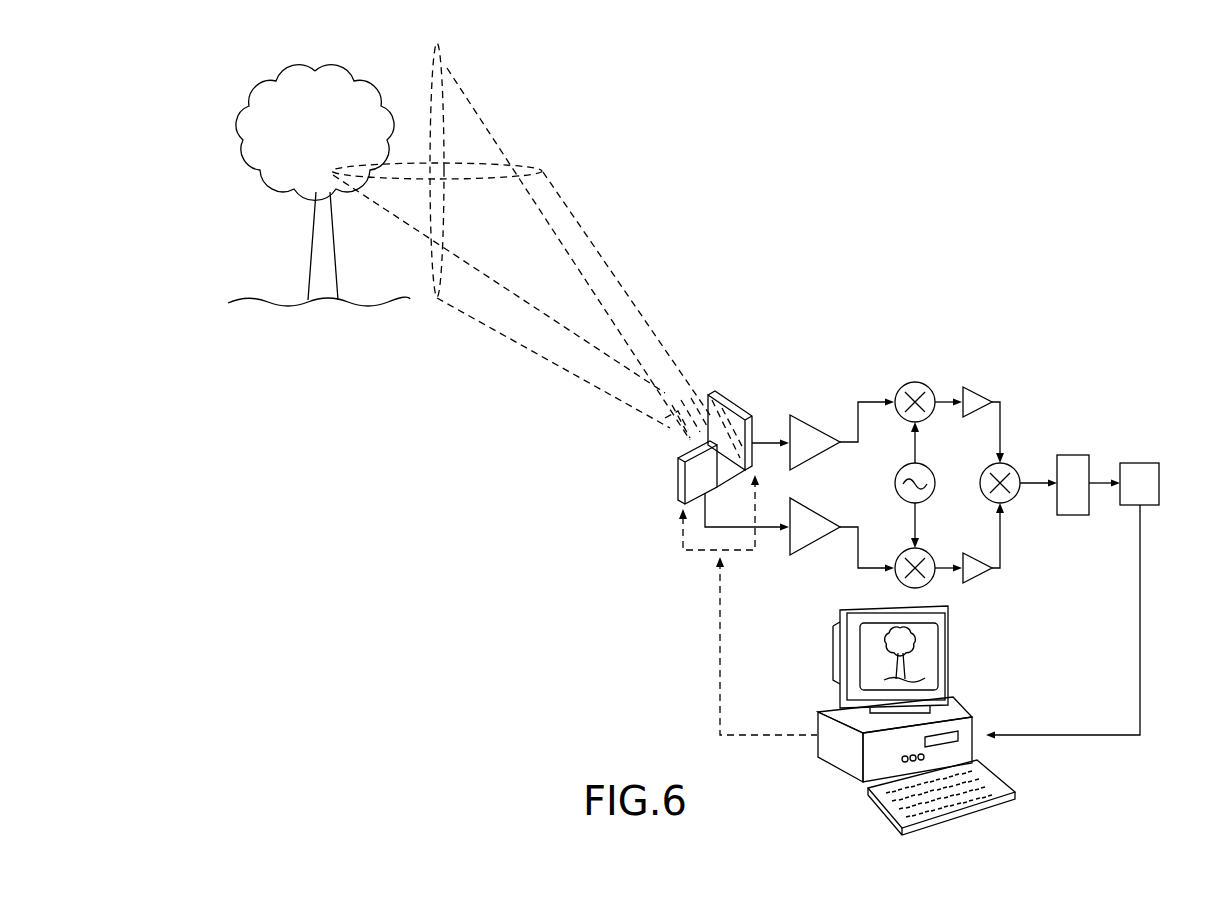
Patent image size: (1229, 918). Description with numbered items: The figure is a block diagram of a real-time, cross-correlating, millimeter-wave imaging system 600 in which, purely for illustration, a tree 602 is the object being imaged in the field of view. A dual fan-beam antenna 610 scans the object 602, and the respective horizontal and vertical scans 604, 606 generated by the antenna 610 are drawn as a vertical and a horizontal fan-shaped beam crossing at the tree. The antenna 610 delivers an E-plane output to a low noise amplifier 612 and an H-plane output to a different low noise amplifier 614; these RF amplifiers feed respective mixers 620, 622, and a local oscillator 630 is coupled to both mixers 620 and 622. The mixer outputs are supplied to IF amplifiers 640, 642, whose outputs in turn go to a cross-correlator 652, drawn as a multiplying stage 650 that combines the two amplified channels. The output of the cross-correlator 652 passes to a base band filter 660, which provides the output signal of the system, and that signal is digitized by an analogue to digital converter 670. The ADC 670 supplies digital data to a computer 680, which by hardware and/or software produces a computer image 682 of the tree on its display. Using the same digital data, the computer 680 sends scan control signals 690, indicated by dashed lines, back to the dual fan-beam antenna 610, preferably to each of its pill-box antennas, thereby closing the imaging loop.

The millimeter-wave imaging system 600 is at (976, 178).
The tree 602 is at (253, 184).
The horizontal scan 604 is at (390, 54).
The vertical scan 606 is at (528, 107).
The dual fan-beam antenna 610 is at (736, 388).
The low noise amplifier 612 is at (816, 428).
The low noise amplifier 614 is at (822, 516).
The mixer 620 is at (898, 372).
The mixer 622 is at (899, 556).
The local oscillator 630 is at (930, 471).
The IF amplifier 640 is at (978, 387).
The IF amplifier 642 is at (985, 576).
The mixer 650 is at (986, 498).
The cross-correlator 652 is at (1017, 522).
The base band filter 660 is at (1074, 454).
The analogue to digital converter 670 is at (1156, 507).
The computer 680 is at (962, 648).
The computer image 682 is at (927, 670).
The scan control signals 690 is at (720, 655).